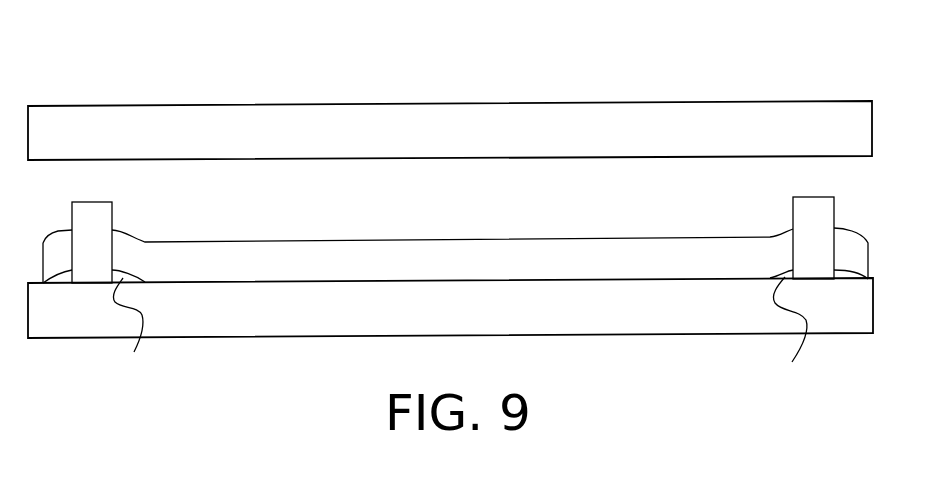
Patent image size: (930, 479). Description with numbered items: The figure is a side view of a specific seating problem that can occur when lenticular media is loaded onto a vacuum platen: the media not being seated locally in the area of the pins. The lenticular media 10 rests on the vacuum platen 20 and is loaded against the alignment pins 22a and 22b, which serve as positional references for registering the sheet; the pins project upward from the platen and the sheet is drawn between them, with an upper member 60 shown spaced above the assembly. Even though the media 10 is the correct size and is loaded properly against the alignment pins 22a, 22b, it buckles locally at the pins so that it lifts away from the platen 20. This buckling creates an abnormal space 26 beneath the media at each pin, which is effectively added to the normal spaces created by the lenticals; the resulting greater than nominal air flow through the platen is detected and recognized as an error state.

The upper plate 60 is at (328, 127).
The vacuum platen 20 is at (277, 317).
The lenticular media 10 is at (405, 255).
The alignment pin 22a is at (97, 215).
The alignment pin 22b is at (810, 217).
The abnormal space 26 is at (459, 337).